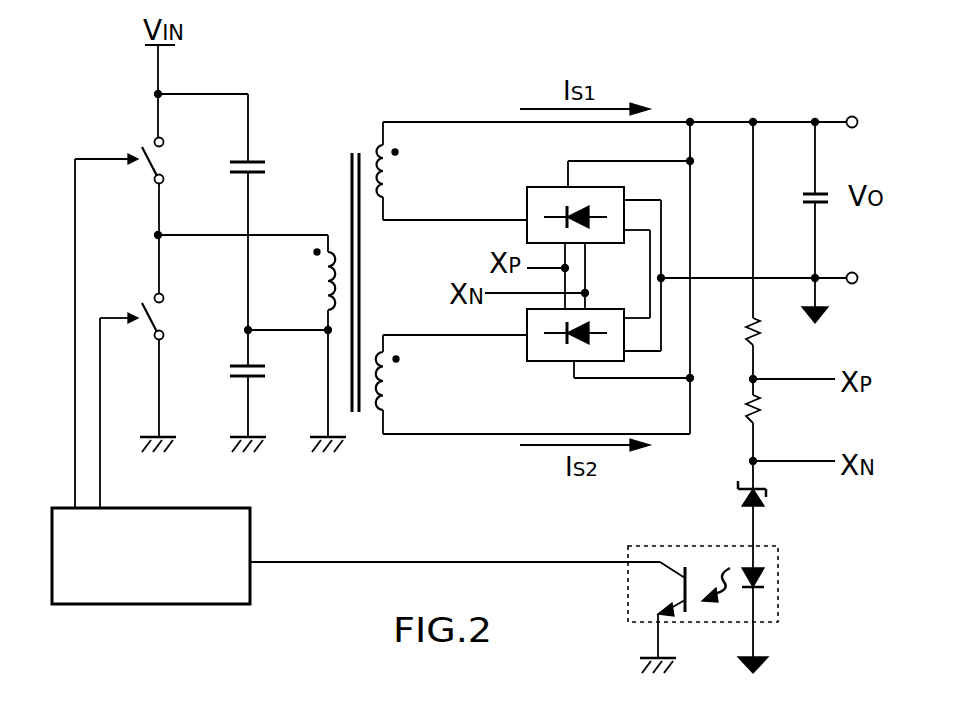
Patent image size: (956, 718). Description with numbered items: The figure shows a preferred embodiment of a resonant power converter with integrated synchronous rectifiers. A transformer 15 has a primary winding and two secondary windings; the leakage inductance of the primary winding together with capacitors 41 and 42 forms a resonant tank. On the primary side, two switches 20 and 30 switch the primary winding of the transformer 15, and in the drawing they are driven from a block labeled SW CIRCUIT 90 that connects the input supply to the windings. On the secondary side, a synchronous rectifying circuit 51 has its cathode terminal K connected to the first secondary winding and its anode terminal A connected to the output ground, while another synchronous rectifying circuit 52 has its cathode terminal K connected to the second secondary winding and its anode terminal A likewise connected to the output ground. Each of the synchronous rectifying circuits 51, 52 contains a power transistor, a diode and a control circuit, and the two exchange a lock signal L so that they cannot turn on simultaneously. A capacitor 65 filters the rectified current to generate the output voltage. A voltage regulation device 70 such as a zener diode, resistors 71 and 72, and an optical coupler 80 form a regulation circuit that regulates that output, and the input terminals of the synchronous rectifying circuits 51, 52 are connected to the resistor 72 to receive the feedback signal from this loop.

The transformer 15 is at (352, 140).
The switch 20 is at (170, 158).
The switch 30 is at (170, 314).
The capacitor 41 is at (267, 165).
The capacitor 42 is at (267, 370).
The synchronous rectifying circuit 51 is at (545, 186).
The synchronous rectifying circuit 52 is at (553, 361).
The capacitor 65 is at (803, 197).
The voltage regulation device 70 is at (745, 492).
The resistor 71 is at (760, 398).
The resistor 72 is at (760, 320).
The optical coupler 80 is at (627, 580).
The switching circuit 90 is at (50, 551).